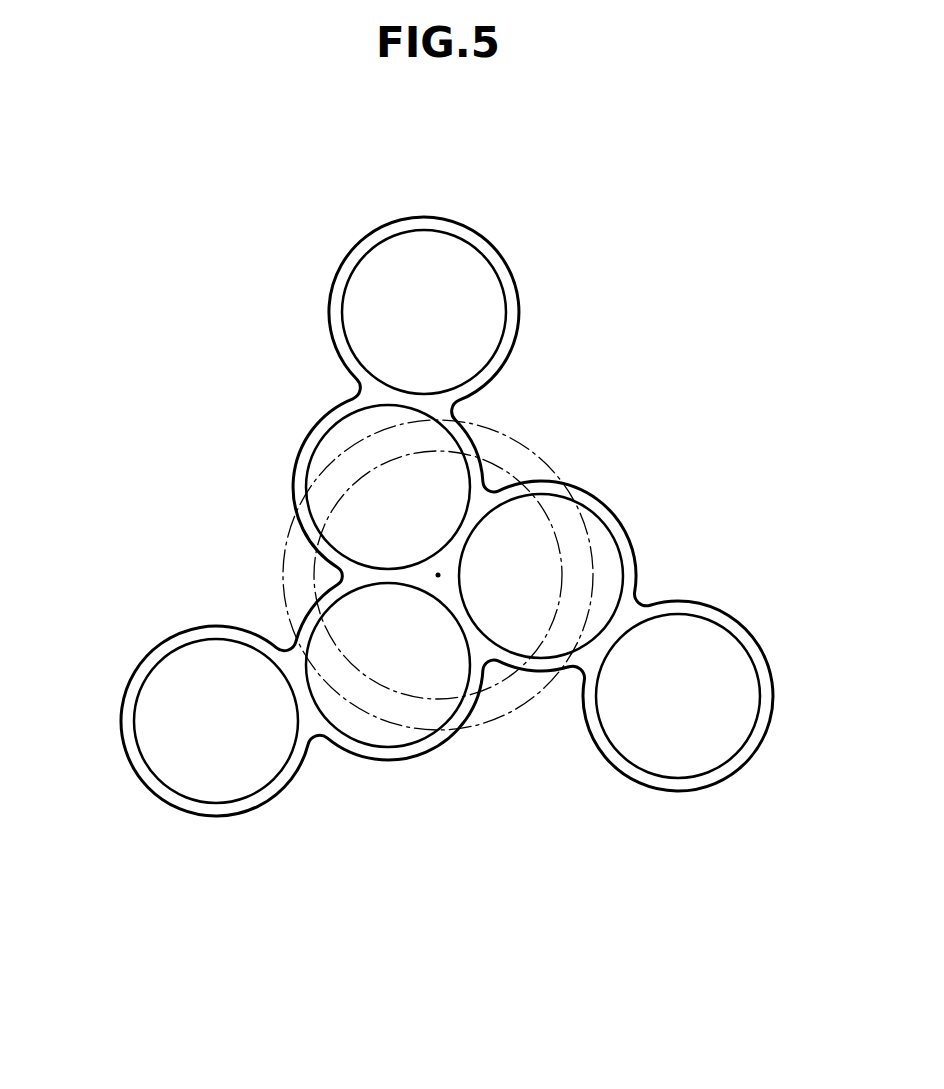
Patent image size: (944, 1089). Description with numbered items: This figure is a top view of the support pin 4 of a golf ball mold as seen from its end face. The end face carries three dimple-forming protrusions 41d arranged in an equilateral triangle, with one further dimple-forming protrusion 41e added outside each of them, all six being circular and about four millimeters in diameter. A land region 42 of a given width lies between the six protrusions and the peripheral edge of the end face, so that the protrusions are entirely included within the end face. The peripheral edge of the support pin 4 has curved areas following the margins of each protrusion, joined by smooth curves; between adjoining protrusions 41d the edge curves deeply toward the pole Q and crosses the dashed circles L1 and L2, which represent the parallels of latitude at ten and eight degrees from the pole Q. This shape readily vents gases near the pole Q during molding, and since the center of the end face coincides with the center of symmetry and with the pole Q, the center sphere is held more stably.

The support pin 4 is at (446, 506).
The dimple-forming protrusion 41d is at (360, 520).
The dimple-forming protrusion 41e is at (468, 279).
The land region 42 is at (352, 576).
The pole Q is at (440, 573).
The circle L1 is at (530, 703).
The circle L2 is at (493, 687).